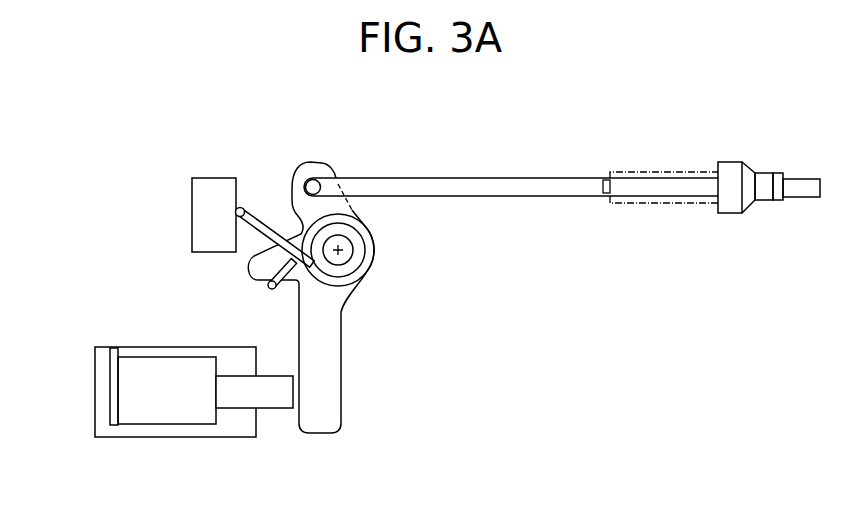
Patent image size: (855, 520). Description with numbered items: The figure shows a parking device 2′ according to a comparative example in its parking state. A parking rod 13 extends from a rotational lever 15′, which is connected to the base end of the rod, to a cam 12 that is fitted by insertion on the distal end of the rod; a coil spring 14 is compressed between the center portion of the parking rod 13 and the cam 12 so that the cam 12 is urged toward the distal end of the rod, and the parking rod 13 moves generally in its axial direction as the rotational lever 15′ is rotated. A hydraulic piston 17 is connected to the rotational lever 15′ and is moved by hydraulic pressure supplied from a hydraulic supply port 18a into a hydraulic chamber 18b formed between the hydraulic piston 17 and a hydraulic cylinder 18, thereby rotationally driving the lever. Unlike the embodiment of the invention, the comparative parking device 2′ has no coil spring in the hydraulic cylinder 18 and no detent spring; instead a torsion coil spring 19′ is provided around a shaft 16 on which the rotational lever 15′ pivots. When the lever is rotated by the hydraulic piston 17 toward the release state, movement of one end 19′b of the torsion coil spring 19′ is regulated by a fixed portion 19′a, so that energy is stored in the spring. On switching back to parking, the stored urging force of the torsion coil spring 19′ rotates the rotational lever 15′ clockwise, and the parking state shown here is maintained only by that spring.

The parking device 2′ is at (113, 158).
The cam 12 is at (748, 173).
The parking rod 13 is at (540, 178).
The coil spring 14 is at (676, 172).
The rotational lever 15′ is at (315, 170).
The shaft 16 is at (340, 250).
The hydraulic piston 17 is at (276, 412).
The hydraulic cylinder 18 is at (143, 348).
The hydraulic supply port 18a is at (113, 352).
The hydraulic chamber 18b is at (113, 390).
The torsion coil spring 19′ is at (367, 253).
The fixed portion 19′a is at (212, 178).
The one end of torsion coil spring 19′b is at (253, 207).